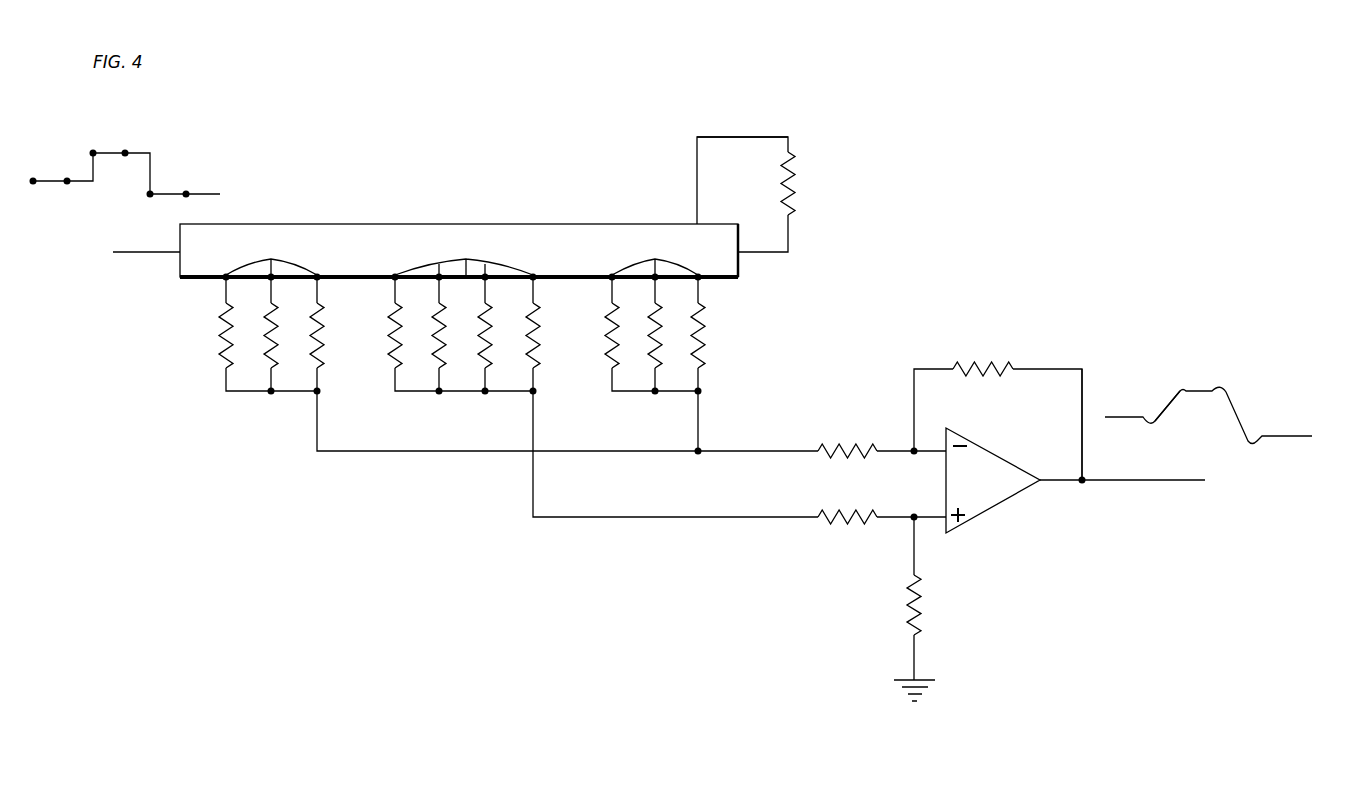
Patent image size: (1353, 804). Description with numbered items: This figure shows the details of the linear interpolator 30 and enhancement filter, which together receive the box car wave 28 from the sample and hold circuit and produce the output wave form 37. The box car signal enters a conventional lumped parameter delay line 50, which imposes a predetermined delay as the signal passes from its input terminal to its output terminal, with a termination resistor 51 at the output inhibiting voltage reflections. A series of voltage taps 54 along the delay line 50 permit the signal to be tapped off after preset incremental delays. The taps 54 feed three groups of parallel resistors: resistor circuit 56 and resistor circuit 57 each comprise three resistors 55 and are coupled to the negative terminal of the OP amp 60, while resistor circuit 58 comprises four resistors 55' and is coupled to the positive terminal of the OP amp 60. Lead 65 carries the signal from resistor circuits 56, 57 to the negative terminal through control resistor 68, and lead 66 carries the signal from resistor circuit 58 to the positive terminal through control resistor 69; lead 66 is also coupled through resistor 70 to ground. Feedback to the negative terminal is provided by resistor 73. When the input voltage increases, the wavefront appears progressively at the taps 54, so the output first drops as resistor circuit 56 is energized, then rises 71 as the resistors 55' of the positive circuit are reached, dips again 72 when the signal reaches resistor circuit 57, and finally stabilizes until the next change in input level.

The box car wave 28 is at (165, 110).
The linear interpolator 30 is at (817, 169).
The output wave form 37 is at (1292, 403).
The delay line 50 is at (348, 214).
The termination resistor 51 is at (797, 186).
The voltage taps 54 is at (462, 271).
The resistors 55 is at (506, 335).
The resistors 55' is at (556, 335).
The resistor circuit 56 is at (214, 373).
The resistor circuit 57 is at (773, 374).
The resistor circuit 58 is at (466, 404).
The OP amp 60 is at (996, 506).
The lead 65 is at (779, 449).
The lead 66 is at (779, 516).
The control resistor 68 is at (880, 418).
The control resistor 69 is at (880, 485).
The resistor 70 is at (925, 592).
The rise in output signal 71 is at (1168, 403).
The second dip 72 is at (1082, 411).
The feedback resistor 73 is at (986, 366).